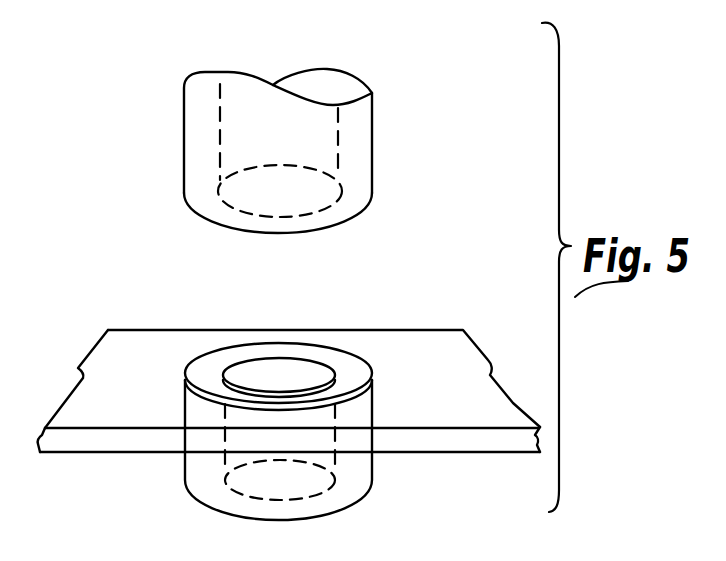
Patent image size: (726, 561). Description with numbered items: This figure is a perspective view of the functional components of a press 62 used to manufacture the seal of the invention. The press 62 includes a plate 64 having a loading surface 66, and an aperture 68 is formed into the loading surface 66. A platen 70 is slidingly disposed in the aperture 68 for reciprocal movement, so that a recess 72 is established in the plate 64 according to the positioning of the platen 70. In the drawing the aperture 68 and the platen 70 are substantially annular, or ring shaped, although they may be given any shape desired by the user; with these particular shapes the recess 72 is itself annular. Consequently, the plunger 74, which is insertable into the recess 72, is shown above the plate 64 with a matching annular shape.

The press 62 is at (104, 150).
The plate 64 is at (115, 442).
The loading surface 66 is at (433, 340).
The aperture 68 is at (203, 360).
The platen 70 is at (360, 487).
The recess 72 is at (340, 368).
The plunger 74 is at (365, 117).